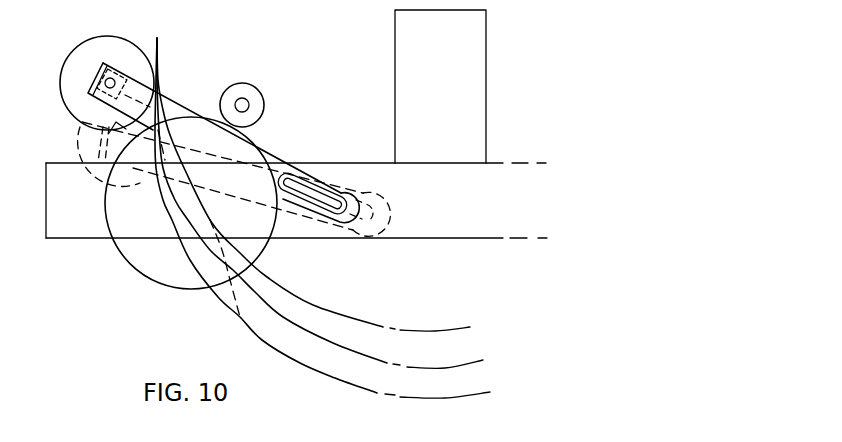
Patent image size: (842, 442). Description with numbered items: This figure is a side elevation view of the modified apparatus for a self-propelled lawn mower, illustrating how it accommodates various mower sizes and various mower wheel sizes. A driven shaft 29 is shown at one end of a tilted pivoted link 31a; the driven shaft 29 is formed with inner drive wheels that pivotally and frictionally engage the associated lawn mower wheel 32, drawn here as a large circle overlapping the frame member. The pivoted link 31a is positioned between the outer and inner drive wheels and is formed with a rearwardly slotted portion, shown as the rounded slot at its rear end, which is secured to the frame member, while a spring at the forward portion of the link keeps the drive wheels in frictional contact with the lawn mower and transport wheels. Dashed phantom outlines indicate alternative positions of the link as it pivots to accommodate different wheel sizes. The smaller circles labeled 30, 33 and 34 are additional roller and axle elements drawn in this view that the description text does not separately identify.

The driven shaft 29 is at (103, 65).
The pivot roller 30 is at (115, 43).
The pivoted link 31a is at (171, 103).
The lawn mower wheel 32 is at (243, 140).
The small roller 33 is at (229, 87).
The roller axle 34 is at (246, 102).